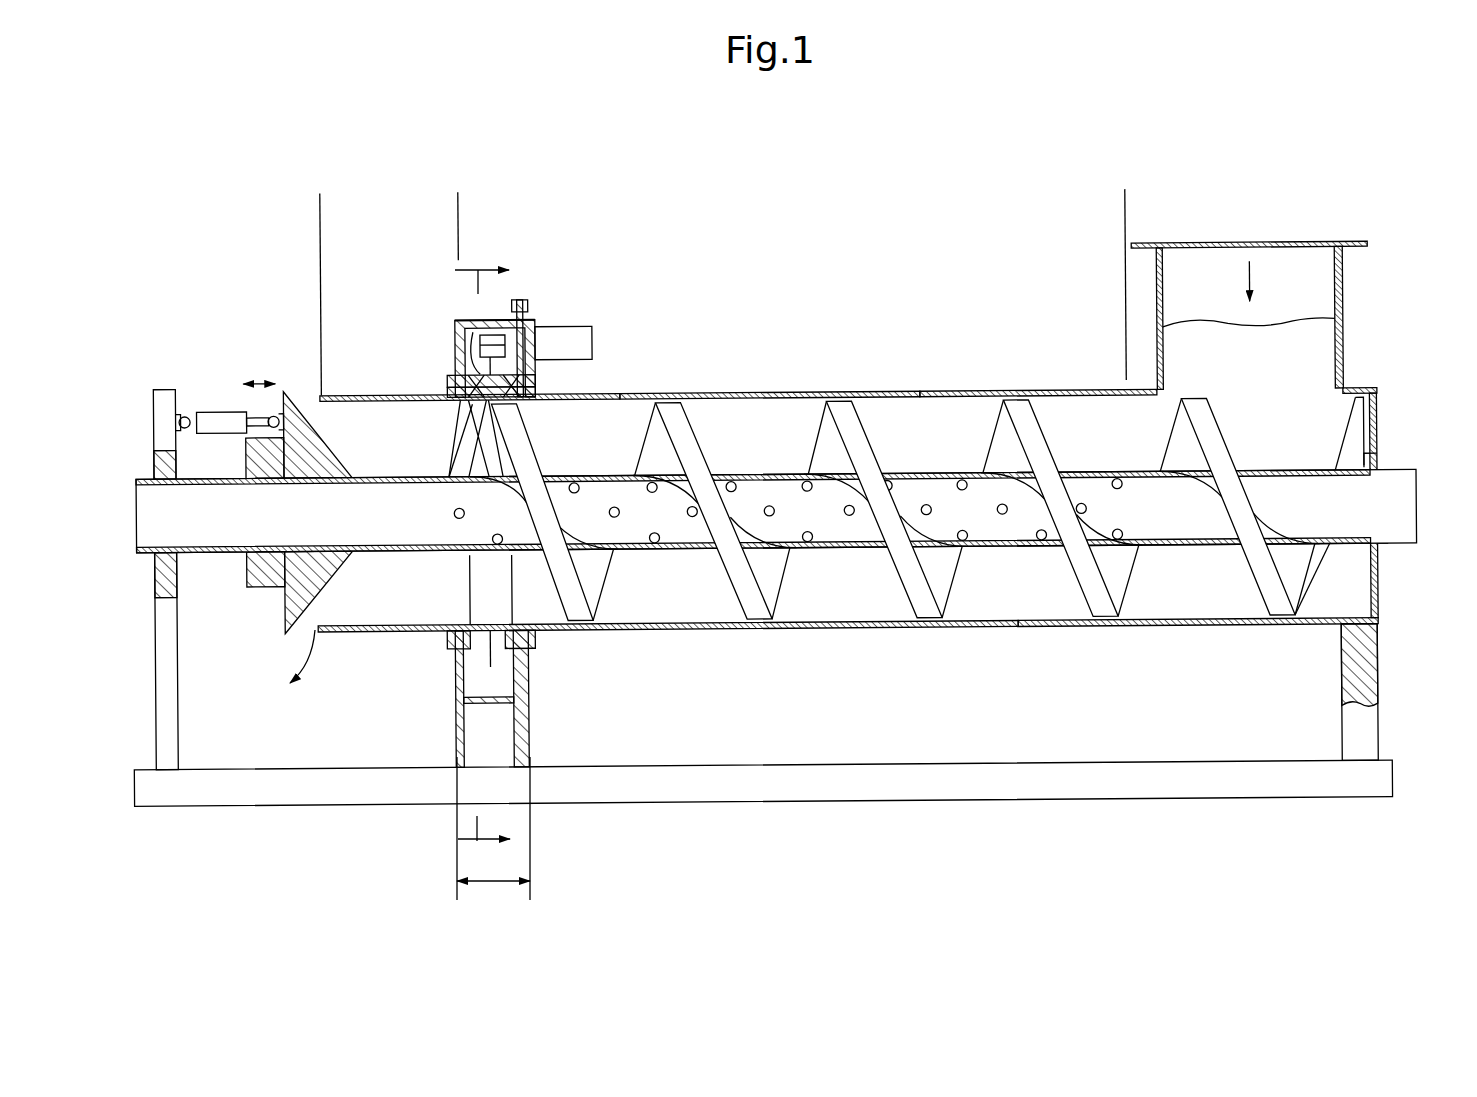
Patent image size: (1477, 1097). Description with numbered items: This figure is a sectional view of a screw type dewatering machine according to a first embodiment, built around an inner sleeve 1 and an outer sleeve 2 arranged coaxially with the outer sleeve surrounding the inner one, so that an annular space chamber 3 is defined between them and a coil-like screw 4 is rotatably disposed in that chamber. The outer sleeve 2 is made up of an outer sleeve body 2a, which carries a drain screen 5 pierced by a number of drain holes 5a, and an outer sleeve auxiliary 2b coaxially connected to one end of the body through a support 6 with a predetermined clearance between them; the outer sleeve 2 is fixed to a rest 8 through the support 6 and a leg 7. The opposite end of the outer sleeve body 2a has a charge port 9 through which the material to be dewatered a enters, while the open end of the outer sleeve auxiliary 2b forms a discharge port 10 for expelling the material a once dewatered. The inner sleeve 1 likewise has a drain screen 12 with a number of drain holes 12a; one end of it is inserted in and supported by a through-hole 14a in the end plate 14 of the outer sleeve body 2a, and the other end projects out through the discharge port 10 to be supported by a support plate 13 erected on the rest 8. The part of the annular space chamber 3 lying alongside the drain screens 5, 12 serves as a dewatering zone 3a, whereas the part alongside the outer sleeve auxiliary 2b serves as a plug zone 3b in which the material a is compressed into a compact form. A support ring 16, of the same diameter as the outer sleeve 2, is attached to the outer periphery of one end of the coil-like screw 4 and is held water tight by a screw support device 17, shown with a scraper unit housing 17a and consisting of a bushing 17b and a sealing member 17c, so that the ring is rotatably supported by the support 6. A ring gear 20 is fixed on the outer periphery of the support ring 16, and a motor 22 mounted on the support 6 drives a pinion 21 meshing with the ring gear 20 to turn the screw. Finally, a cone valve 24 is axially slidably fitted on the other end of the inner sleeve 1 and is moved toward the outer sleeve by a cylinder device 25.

The inner sleeve 1 is at (755, 490).
The outer sleeve 2 is at (960, 389).
The outer sleeve body 2a is at (836, 392).
The outer sleeve auxiliary 2b is at (350, 394).
The annular space chamber 3 is at (857, 628).
The dewatering zone 3a is at (458, 217).
The plug zone 3b is at (320, 218).
The coil-like screw 4 is at (928, 624).
The drain screen 5 is at (1042, 389).
The drain holes 5a is at (1043, 626).
The support 6 is at (455, 718).
The leg 7 is at (1342, 663).
The rest 8 is at (1043, 763).
The charge port 9 is at (1277, 262).
The discharge port 10 is at (313, 630).
The drain screen 12 is at (677, 534).
The drain holes 12a is at (492, 541).
The support plate 13 is at (177, 690).
The end plate 14 is at (1378, 410).
The through-hole 14a is at (1378, 471).
The support ring 16 is at (480, 512).
The screw support device 17 is at (450, 350).
The scraper unit housing 17a is at (449, 346).
The bushing 17b is at (447, 382).
The sealing member 17c is at (422, 395).
The ring gear 20 is at (487, 335).
The pinion 21 is at (490, 333).
The motor 22 is at (567, 338).
The cone valve 24 is at (283, 590).
The cylinder device 25 is at (221, 410).
The material to be dewatered a is at (1302, 350).